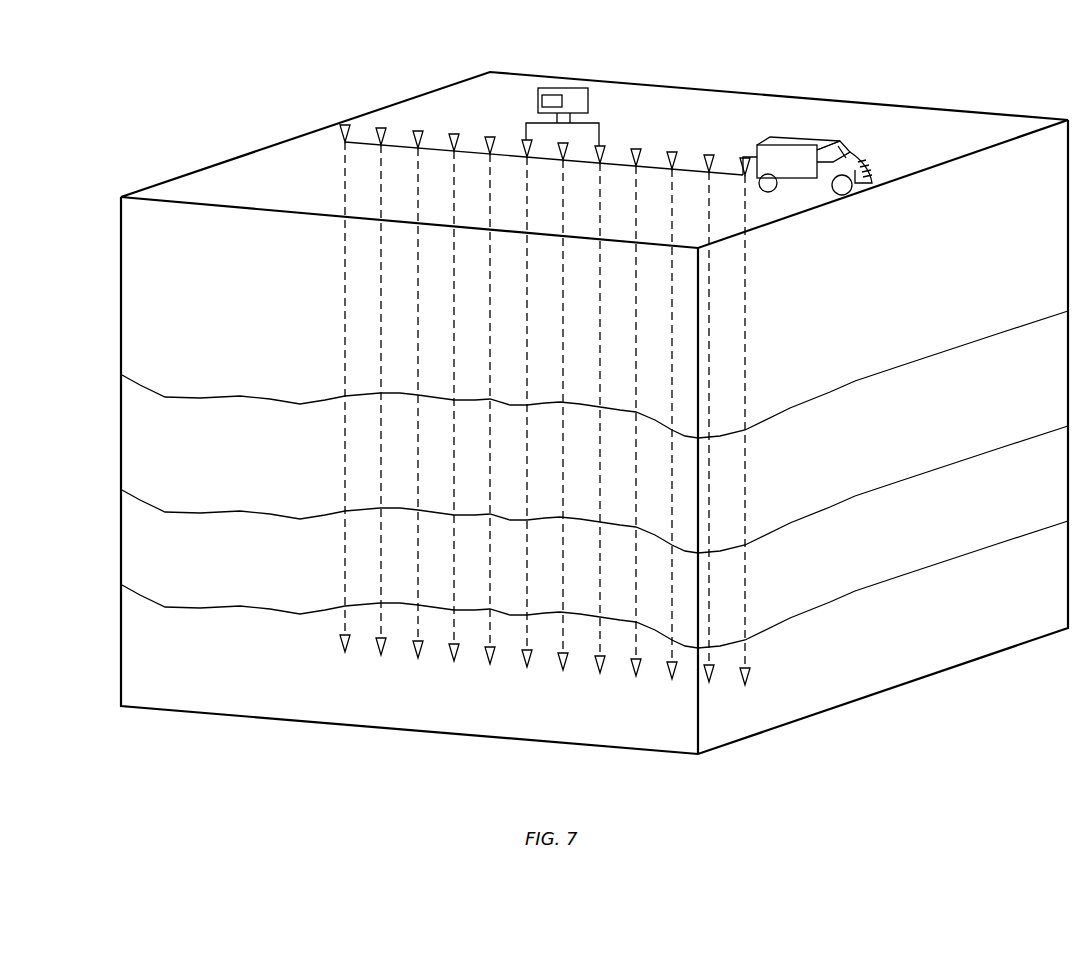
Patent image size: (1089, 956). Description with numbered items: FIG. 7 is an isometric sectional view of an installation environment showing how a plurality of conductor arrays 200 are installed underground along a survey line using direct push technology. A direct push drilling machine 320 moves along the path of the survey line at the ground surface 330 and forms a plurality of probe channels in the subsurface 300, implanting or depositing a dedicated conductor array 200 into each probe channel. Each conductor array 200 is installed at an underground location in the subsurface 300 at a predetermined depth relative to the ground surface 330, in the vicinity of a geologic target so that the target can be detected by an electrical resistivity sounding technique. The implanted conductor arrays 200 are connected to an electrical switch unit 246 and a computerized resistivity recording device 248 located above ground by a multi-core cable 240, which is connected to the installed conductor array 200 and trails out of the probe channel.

The conductor array 200 is at (342, 646).
The multi-core cable 240 is at (345, 312).
The electrical switch unit 246 is at (547, 82).
The computerized resistivity recording device 248 is at (583, 82).
The subsurface 300 is at (975, 610).
The direct push drilling machine 320 is at (796, 132).
The ground surface 330 is at (283, 186).